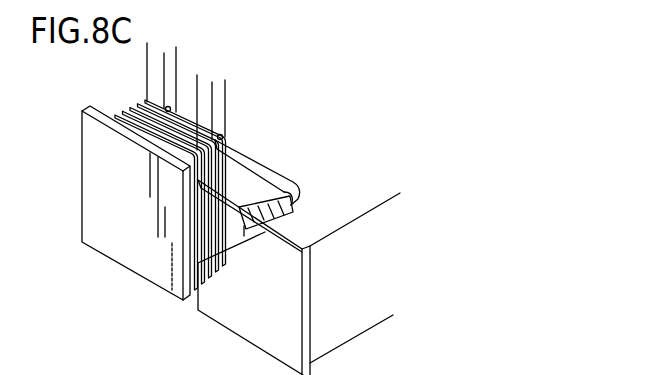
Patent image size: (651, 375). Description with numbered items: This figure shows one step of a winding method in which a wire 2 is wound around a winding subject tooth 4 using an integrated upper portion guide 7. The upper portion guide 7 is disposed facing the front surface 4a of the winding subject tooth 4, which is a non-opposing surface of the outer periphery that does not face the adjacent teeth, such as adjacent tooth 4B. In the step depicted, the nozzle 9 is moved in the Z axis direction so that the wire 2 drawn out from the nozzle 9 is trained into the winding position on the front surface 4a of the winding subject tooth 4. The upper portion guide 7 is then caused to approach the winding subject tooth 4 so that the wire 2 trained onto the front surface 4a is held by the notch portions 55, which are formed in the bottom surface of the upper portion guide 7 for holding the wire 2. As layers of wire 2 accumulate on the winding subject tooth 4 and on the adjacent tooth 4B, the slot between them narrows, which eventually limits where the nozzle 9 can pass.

The winding subject tooth 4 is at (116, 234).
The front surface 4a is at (192, 81).
The adjacent tooth 4B is at (240, 318).
The upper portion guide 7 is at (214, 65).
The wire 2 is at (271, 166).
The nozzle 9 is at (288, 208).
The notch portion 55 is at (167, 106).